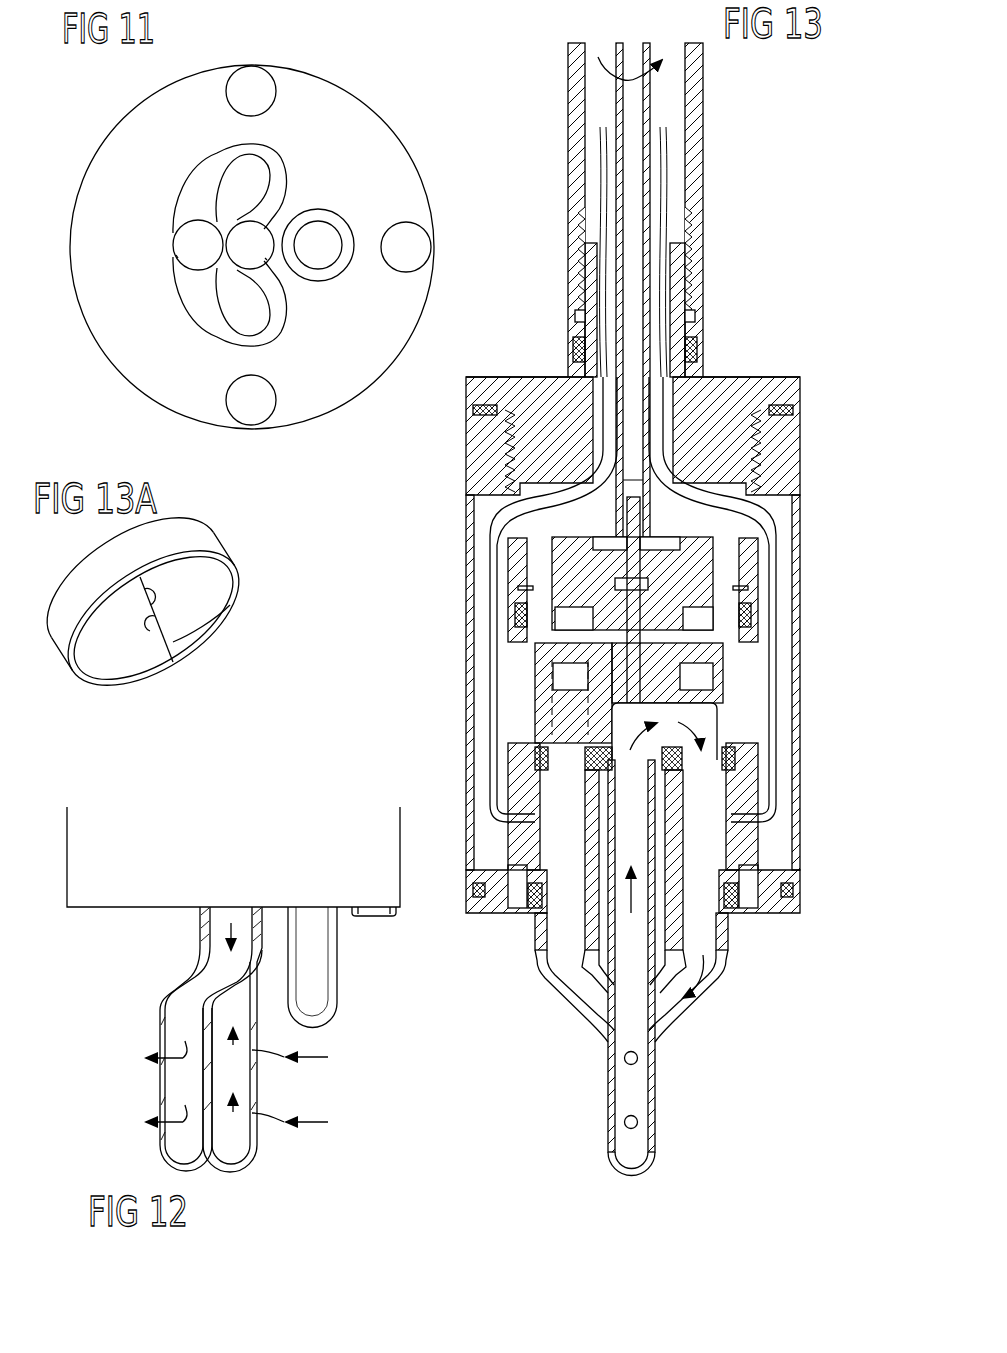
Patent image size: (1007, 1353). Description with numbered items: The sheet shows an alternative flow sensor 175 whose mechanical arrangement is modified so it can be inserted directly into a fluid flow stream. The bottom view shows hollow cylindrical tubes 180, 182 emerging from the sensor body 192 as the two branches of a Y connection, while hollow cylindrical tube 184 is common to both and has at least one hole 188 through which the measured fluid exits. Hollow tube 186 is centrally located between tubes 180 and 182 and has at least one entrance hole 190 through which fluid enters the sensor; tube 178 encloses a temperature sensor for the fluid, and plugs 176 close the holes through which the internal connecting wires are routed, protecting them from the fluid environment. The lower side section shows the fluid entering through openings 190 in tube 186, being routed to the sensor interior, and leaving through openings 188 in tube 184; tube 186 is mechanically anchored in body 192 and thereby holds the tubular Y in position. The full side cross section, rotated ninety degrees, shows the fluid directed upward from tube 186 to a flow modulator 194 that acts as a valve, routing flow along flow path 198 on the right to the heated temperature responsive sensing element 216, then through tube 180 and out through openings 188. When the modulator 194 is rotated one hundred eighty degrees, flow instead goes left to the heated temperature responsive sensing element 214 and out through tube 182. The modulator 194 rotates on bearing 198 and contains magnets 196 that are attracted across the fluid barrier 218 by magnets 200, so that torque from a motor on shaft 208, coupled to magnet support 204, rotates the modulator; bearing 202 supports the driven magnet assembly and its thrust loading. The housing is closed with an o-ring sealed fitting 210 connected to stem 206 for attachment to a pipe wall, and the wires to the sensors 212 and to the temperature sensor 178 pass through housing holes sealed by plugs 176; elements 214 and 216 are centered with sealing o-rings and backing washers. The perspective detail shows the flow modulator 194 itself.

In FIG. 11, the flow sensor 175 is at (440, 301).
In FIG. 12, the flow sensor 175 is at (106, 976).
In FIG. 13, the flow sensor 175 is at (722, 133).
In FIG. 11, the plugs 176 is at (226, 96).
In FIG. 12, the plugs 176 is at (373, 914).
In FIG. 13, the plugs 176 is at (508, 913).
In FIG. 11, the tube 178 is at (345, 233).
In FIG. 12, the tube 178 is at (337, 1000).
In FIG. 11, the hollow cylindrical tube 180 is at (201, 171).
In FIG. 13, the hollow cylindrical tube 180 is at (722, 977).
In FIG. 11, the hollow cylindrical tube 182 is at (201, 314).
In FIG. 13, the hollow cylindrical tube 182 is at (542, 970).
In FIG. 11, the hollow cylindrical tube 184 is at (176, 255).
In FIG. 12, the hollow cylindrical tube 184 is at (160, 1154).
In FIG. 11, the hollow tube 186 is at (265, 258).
In FIG. 12, the hollow tube 186 is at (254, 1154).
In FIG. 13, the hollow tube 186 is at (655, 1158).
In FIG. 11, the hole 188 is at (174, 237).
In FIG. 12, the hole 188 is at (160, 1105).
In FIG. 11, the entrance hole 190 is at (268, 231).
In FIG. 12, the entrance hole 190 is at (252, 1105).
In FIG. 13, the entrance hole 190 is at (638, 1058).
In FIG. 11, the sensor body 192 is at (359, 105).
In FIG. 12, the sensor body 192 is at (141, 911).
In FIG. 13, the sensor body 192 is at (492, 552).
In FIG. 13A, the flow modulator 194 is at (192, 669).
In FIG. 13, the flow modulator 194 is at (727, 688).
In FIG. 13, the magnets 196 is at (723, 658).
In FIG. 13, the flow path 198 is at (703, 713).
In FIG. 13, the magnets 200 is at (713, 608).
In FIG. 13, the bearing 202 is at (640, 570).
In FIG. 13, the magnet support 204 is at (690, 525).
In FIG. 13, the stem 206 is at (695, 300).
In FIG. 13, the shaft 208 is at (650, 227).
In FIG. 13, the o-ring sealed fitting 210 is at (735, 377).
In FIG. 13, the sensors 212 is at (690, 485).
In FIG. 13, the heated temperature responsive sensing element 214 is at (540, 812).
In FIG. 13, the heated temperature responsive sensing element 216 is at (727, 813).
In FIG. 13, the fluid barrier 218 is at (727, 637).